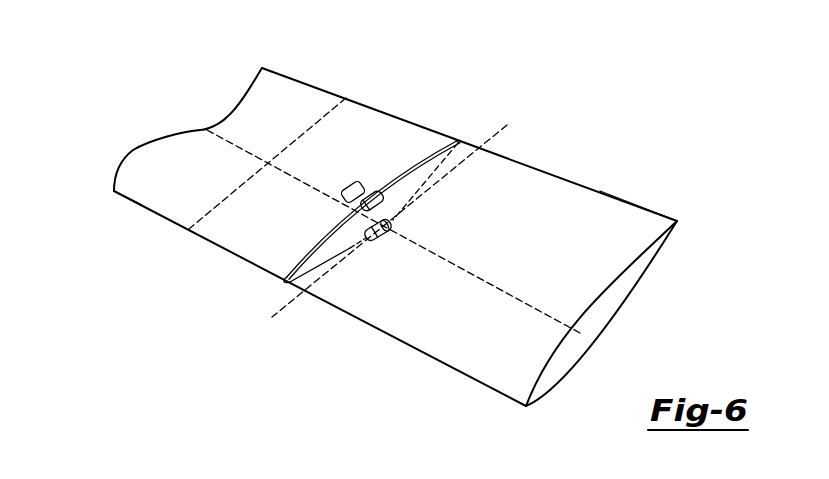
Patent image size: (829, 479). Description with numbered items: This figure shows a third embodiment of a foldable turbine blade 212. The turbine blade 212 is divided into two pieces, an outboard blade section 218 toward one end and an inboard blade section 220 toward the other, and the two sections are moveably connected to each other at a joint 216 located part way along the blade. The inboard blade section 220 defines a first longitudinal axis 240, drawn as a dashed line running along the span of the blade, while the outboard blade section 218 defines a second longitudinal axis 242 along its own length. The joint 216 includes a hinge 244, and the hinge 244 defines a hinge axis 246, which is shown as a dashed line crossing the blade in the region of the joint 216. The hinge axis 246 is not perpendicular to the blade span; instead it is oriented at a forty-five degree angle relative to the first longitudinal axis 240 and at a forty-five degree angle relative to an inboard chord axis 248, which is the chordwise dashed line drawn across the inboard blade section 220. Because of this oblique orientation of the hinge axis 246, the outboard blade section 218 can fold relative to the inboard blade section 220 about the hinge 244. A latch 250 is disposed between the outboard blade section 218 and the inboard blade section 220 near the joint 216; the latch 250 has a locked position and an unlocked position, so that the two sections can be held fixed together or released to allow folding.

The turbine blade 212 is at (566, 120).
The joint 216 is at (468, 126).
The outboard blade section 218 is at (138, 201).
The inboard blade section 220 is at (638, 204).
The first longitudinal axis 240 is at (228, 141).
The second longitudinal axis 242 is at (512, 297).
The hinge 244 is at (376, 243).
The hinge axis 246 is at (282, 309).
The inboard chord axis 248 is at (328, 115).
The latch 250 is at (365, 182).